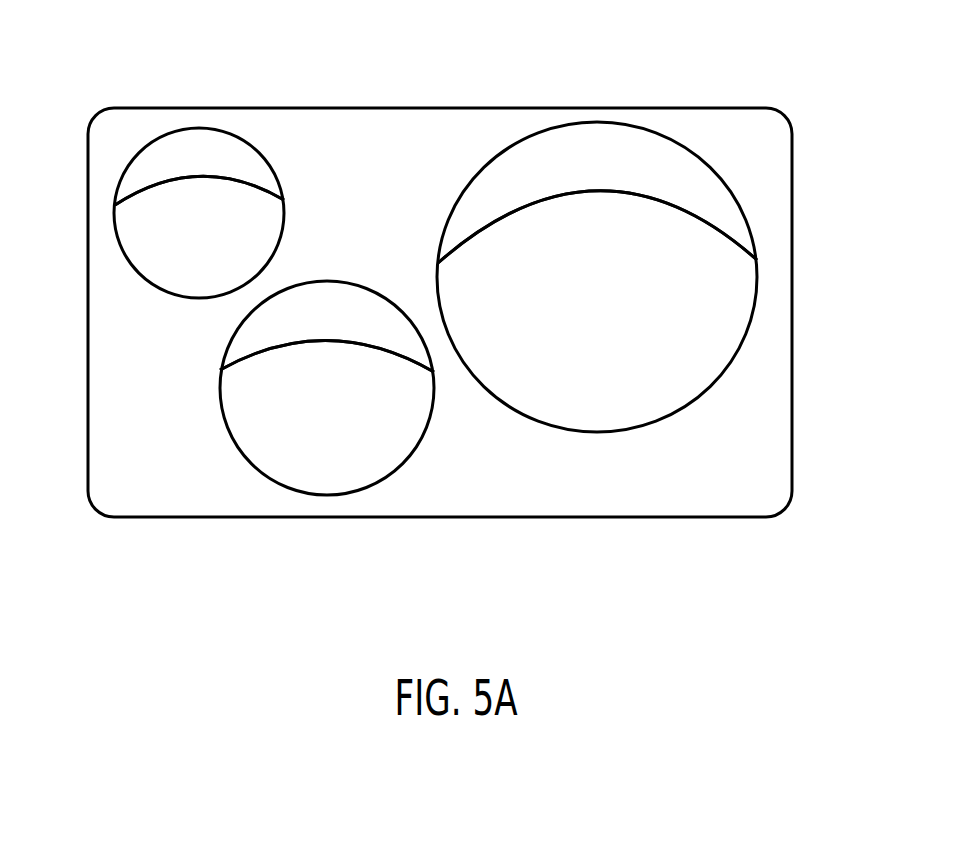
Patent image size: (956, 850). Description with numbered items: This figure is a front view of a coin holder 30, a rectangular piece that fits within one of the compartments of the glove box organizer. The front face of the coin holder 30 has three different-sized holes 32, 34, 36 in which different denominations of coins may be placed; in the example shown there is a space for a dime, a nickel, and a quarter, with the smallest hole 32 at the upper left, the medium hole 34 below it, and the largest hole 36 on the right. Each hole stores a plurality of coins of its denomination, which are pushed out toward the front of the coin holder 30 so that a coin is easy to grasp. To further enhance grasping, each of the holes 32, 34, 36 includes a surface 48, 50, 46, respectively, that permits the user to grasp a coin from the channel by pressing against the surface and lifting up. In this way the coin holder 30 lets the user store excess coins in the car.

The coin holder 30 is at (793, 200).
The hole 32 is at (152, 227).
The hole 34 is at (300, 457).
The hole 36 is at (718, 305).
The surface 46 is at (593, 148).
The surface 48 is at (197, 150).
The surface 50 is at (327, 305).